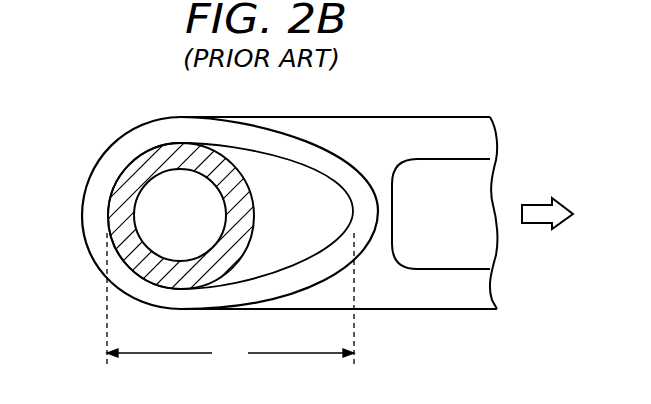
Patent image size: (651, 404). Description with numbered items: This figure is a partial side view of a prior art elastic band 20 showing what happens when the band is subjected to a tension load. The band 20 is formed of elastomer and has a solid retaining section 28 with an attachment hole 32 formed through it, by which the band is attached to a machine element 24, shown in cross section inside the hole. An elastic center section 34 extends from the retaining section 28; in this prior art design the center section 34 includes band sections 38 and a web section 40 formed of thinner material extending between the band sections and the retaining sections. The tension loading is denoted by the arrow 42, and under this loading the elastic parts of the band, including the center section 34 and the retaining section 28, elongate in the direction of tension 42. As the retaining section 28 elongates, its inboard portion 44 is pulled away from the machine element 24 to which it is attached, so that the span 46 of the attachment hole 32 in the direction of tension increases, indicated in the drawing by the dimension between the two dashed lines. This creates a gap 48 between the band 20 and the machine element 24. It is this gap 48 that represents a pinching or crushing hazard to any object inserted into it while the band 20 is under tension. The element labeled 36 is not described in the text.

The elastic band 20 is at (383, 337).
The machine element 24 is at (106, 198).
The retaining section 28 is at (112, 148).
The attachment hole 32 is at (346, 183).
The center section 34 is at (428, 117).
The upper edge of slot 36 is at (462, 143).
The band section 38 is at (435, 283).
The web section 40 is at (438, 206).
The arrow 42 is at (563, 207).
The inboard portion 44 is at (365, 234).
The span 46 is at (230, 301).
The gap 48 is at (292, 183).